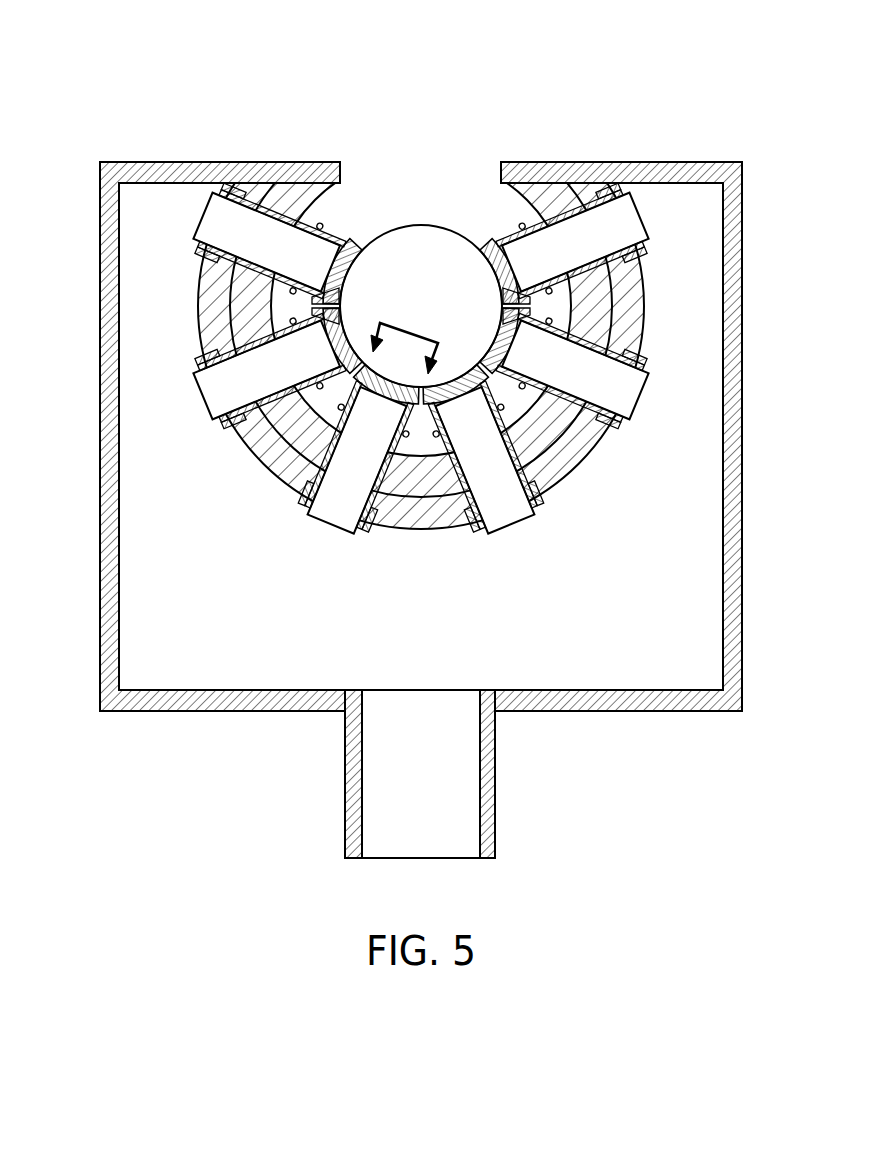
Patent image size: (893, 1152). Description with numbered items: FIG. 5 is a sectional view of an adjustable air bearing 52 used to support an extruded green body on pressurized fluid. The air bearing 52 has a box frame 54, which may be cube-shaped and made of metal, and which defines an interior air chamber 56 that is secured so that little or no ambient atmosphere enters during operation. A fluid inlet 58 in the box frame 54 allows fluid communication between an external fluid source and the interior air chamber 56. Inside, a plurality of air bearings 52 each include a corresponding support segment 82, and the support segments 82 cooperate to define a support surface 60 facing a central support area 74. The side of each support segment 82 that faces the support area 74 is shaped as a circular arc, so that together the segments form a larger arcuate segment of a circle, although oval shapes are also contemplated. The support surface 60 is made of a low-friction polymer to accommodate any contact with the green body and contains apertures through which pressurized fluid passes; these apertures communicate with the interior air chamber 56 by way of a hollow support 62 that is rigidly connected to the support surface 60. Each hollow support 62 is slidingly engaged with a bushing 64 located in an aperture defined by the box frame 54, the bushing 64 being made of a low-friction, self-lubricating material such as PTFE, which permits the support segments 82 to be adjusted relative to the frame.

The air bearing 52 is at (483, 93).
The box frame 54 is at (100, 613).
The interior air chamber 56 is at (218, 648).
The fluid inlet 58 is at (495, 788).
The support surface 60 is at (499, 283).
The hollow support 62 is at (215, 422).
The bushing 64 is at (538, 498).
The support area 74 is at (395, 267).
The support segment 82 is at (493, 332).